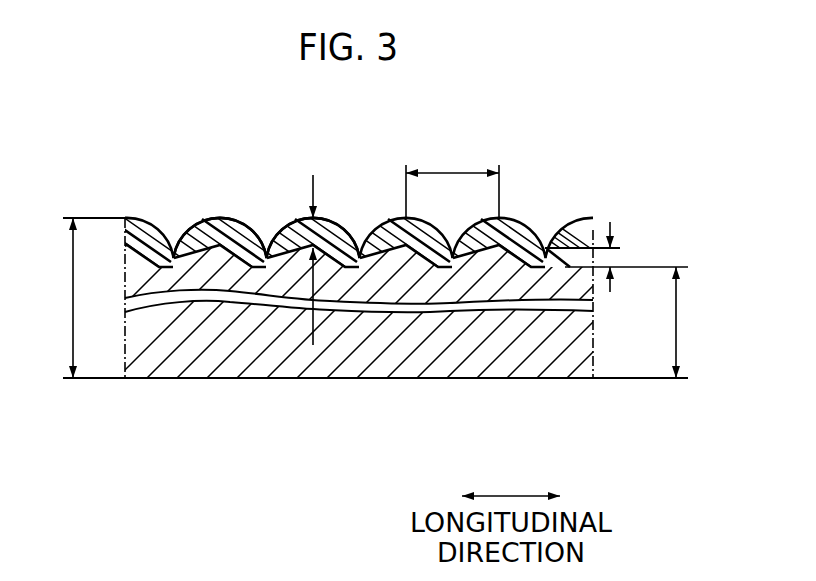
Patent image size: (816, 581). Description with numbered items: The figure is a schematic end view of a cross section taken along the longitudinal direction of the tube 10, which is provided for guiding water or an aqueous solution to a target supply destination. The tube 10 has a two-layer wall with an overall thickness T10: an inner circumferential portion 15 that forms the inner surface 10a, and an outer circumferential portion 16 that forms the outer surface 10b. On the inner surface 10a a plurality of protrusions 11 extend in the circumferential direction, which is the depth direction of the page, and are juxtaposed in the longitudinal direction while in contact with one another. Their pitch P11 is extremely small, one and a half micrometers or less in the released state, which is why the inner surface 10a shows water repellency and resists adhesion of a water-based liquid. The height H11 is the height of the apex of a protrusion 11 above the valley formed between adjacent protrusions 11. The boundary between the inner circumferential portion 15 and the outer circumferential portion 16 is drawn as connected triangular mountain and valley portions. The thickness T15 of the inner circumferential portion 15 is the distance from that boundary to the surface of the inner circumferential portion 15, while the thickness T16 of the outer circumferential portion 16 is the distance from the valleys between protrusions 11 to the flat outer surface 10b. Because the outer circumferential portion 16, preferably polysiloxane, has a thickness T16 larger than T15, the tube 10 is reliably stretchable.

The tube 10 is at (275, 386).
The inner surface 10a is at (143, 217).
The outer surface 10b is at (145, 378).
The protrusion 11 is at (290, 222).
The inner circumferential portion 15 is at (597, 217).
The outer circumferential portion 16 is at (553, 367).
The height of protrusion H11 is at (313, 175).
The pitch of protrusions P11 is at (452, 179).
The thickness of tube T10 is at (49, 298).
The thickness of inner circumferential portion T15 is at (638, 257).
The thickness of outer circumferential portion T16 is at (647, 322).